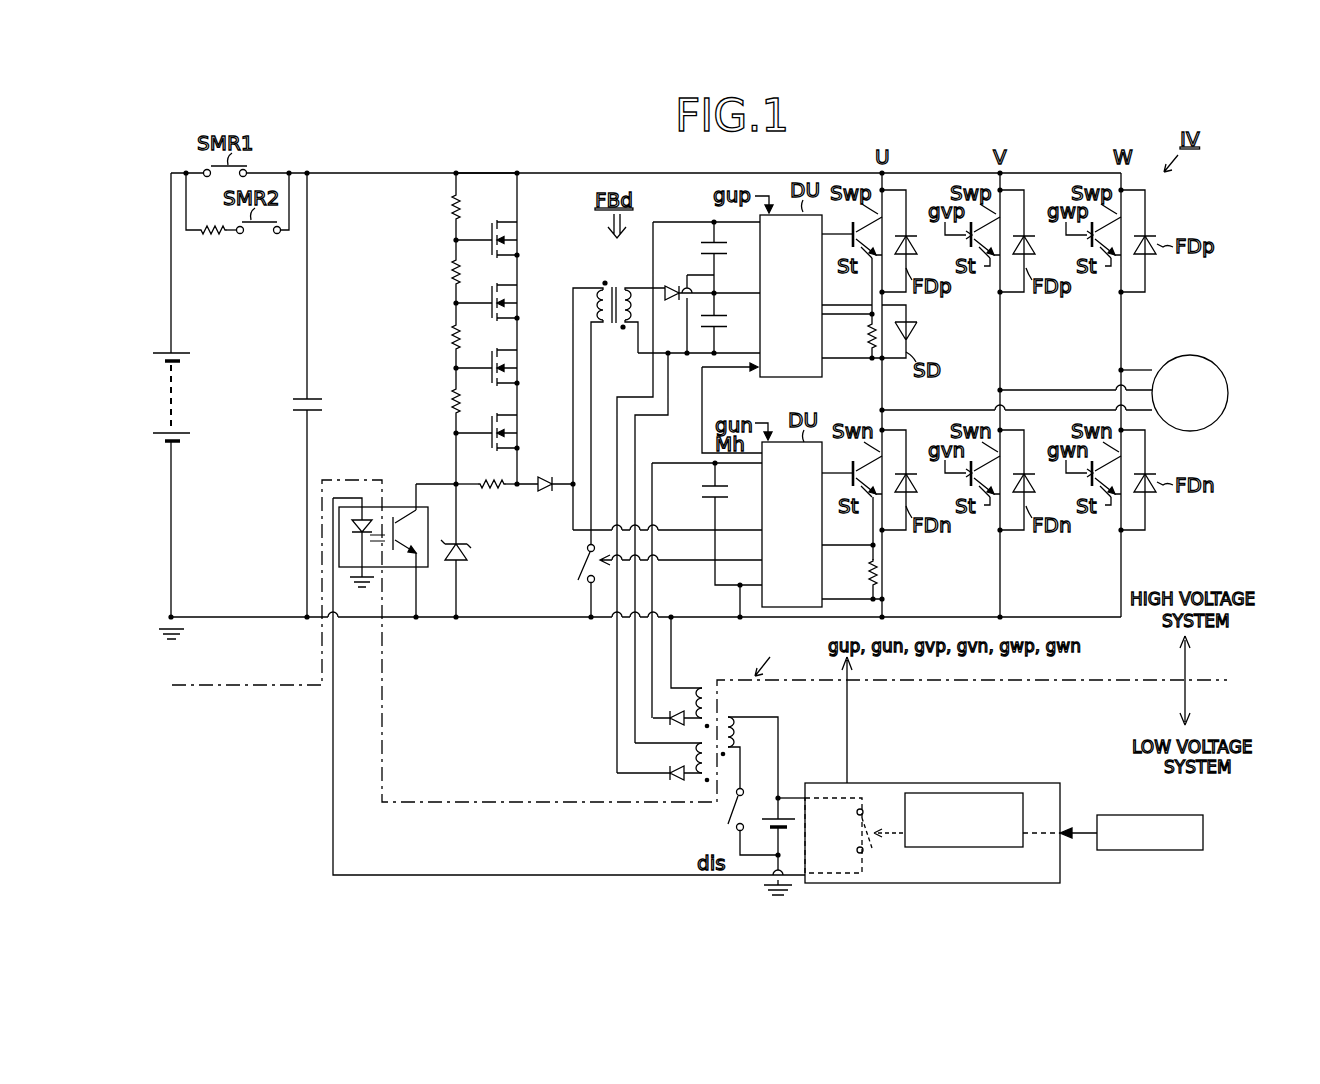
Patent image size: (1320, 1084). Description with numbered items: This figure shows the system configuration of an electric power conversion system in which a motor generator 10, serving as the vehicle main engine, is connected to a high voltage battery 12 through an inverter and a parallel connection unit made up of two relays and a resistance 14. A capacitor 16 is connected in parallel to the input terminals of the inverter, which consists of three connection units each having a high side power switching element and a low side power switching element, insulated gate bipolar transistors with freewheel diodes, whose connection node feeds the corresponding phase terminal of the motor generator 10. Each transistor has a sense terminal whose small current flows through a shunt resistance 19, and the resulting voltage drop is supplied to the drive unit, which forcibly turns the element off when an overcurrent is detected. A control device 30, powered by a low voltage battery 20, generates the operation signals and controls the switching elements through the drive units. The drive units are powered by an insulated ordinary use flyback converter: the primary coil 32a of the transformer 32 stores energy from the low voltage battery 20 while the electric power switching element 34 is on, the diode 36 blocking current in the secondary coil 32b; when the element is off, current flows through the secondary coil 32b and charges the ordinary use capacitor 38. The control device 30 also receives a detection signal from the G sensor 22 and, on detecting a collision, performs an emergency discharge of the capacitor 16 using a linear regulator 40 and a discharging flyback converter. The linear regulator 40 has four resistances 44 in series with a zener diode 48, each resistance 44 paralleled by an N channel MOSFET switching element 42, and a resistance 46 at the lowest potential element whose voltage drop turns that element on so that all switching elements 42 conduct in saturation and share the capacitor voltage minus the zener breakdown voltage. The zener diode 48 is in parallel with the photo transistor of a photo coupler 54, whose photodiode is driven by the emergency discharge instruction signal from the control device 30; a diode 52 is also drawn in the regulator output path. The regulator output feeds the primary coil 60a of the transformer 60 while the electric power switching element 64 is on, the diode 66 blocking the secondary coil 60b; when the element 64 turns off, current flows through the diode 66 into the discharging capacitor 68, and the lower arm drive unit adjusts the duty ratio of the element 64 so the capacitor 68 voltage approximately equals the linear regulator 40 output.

The motor generator 10 is at (1195, 355).
The high voltage battery 12 is at (192, 346).
The resistance 14 is at (208, 237).
The capacitor 16 is at (310, 398).
The shunt resistance 19 is at (870, 326).
The low voltage battery 20 is at (760, 819).
The G sensor 22 is at (1146, 815).
The control device 30 is at (1050, 783).
The transformer 32 is at (720, 707).
The primary coil 32a is at (748, 709).
The secondary coil 32b is at (688, 684).
The electric power switching element 34 is at (728, 812).
The diode 36 is at (673, 722).
The ordinary use capacitor 38 is at (728, 254).
The linear regulator 40 is at (538, 170).
The switching element 42 is at (515, 228).
The resistance 44 is at (452, 208).
The resistance 46 is at (494, 491).
The zener diode 48 is at (470, 552).
The diode 52 is at (549, 491).
The photo coupler 54 is at (398, 504).
The transformer 60 is at (615, 395).
The primary coil 60a is at (601, 320).
The secondary coil 60b is at (640, 304).
The electric power switching element 64 is at (576, 570).
The diode 66 is at (672, 284).
The capacitor 68 is at (724, 312).